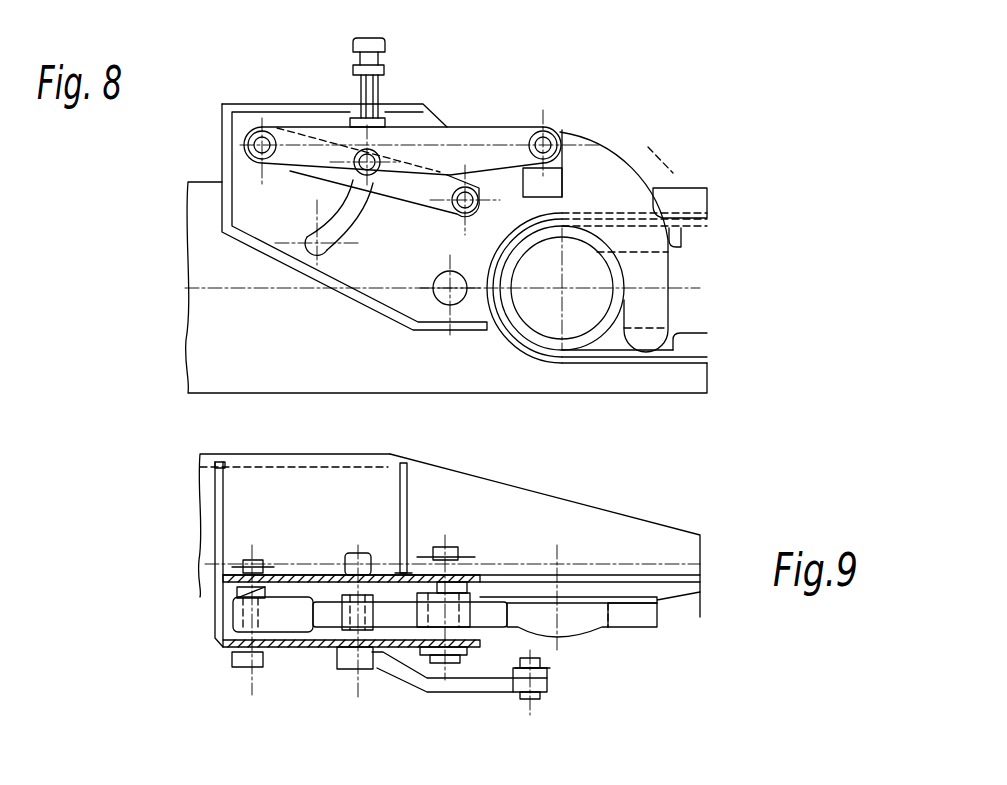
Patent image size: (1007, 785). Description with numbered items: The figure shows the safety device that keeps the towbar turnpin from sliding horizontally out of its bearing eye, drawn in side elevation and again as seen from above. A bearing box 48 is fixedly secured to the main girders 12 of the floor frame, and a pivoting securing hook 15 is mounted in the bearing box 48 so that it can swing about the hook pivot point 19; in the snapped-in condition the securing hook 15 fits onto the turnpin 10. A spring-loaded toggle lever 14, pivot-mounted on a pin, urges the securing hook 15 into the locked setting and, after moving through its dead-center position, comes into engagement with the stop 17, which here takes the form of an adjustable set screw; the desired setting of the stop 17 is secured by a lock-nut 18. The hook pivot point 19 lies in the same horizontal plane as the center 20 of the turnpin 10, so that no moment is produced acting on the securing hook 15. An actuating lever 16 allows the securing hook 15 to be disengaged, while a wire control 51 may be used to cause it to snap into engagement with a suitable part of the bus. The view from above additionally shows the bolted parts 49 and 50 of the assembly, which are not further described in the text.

In FIG. 8, the turnpin 10 is at (542, 312).
In FIG. 9, the turnpin 10 is at (567, 630).
In FIG. 8, the main girder 12 is at (207, 298).
In FIG. 9, the main girder 12 is at (278, 502).
In FIG. 8, the toggle lever 14 is at (287, 138).
In FIG. 9, the toggle lever 14 is at (397, 615).
In FIG. 8, the securing hook 15 is at (650, 272).
In FIG. 9, the securing hook 15 is at (638, 618).
In FIG. 9, the actuating lever 16 is at (497, 687).
In FIG. 8, the stop 17 is at (370, 98).
In FIG. 8, the lock-nut 18 is at (380, 68).
In FIG. 8, the hook pivot point 19 is at (450, 288).
In FIG. 9, the hook pivot point 19 is at (438, 552).
In FIG. 8, the center of the turnpin 20 is at (562, 288).
In FIG. 9, the center of the turnpin 20 is at (557, 585).
In FIG. 8, the bearing box 48 is at (363, 302).
In FIG. 9, the bearing box 48 is at (218, 628).
In FIG. 9, the spring washer 49 is at (233, 588).
In FIG. 9, the nut 50 is at (255, 658).
In FIG. 8, the wire control 51 is at (550, 185).